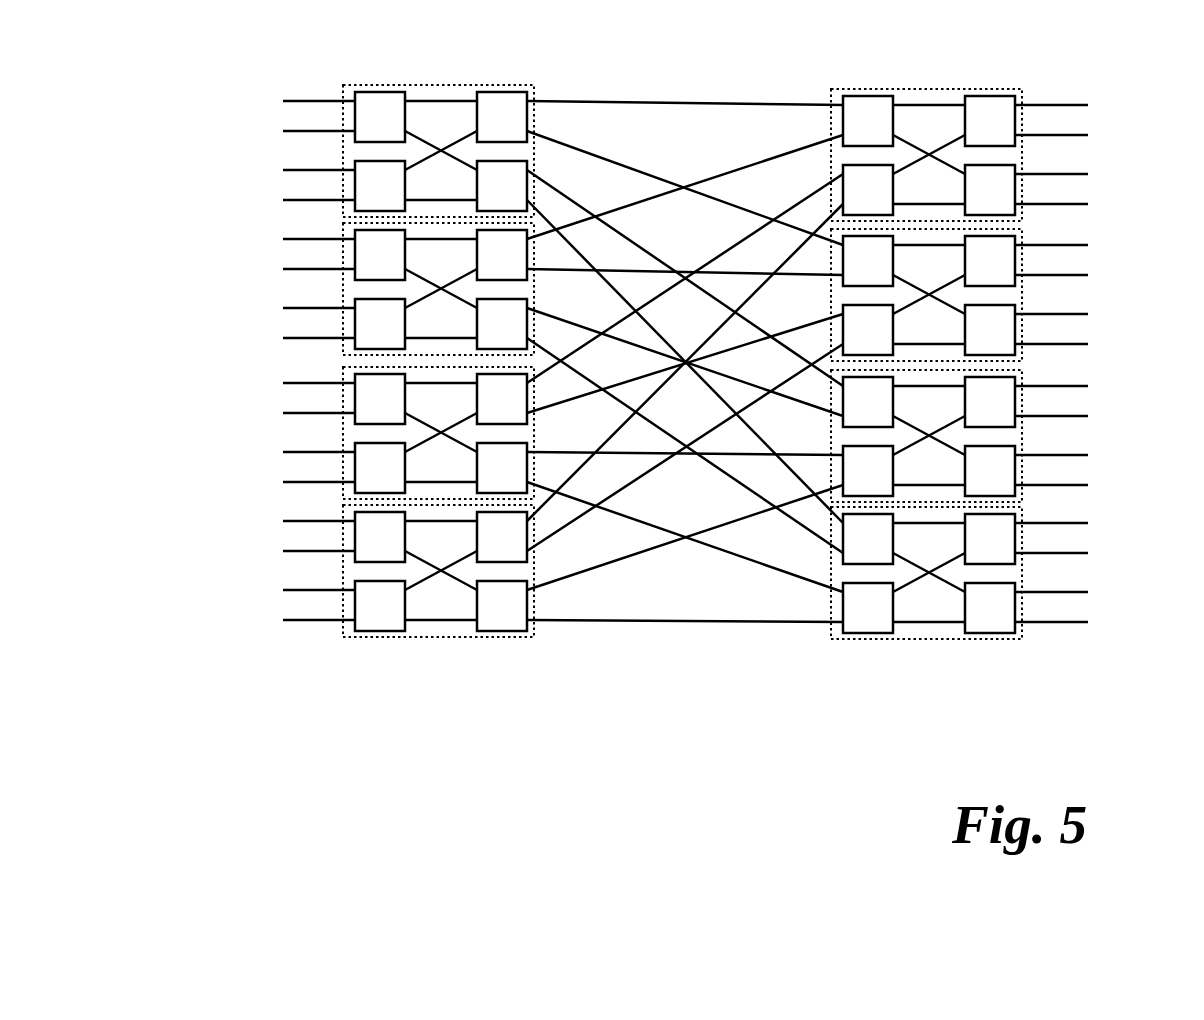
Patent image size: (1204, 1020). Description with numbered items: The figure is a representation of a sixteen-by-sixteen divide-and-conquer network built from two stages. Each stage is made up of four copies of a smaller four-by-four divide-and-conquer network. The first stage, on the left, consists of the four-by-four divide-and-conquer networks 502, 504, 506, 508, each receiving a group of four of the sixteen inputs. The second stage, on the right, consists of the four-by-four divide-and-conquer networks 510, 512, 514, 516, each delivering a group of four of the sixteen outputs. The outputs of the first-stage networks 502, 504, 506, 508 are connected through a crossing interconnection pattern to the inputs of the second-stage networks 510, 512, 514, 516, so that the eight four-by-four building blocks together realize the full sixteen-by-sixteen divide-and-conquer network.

The 4×4 divide-and-conquer network 502 is at (343, 85).
The 4×4 divide-and-conquer network 504 is at (343, 224).
The 4×4 divide-and-conquer network 506 is at (343, 368).
The 4×4 divide-and-conquer network 508 is at (343, 506).
The 4×4 divide-and-conquer network 510 is at (1022, 89).
The 4×4 divide-and-conquer network 512 is at (1022, 229).
The 4×4 divide-and-conquer network 514 is at (1022, 370).
The 4×4 divide-and-conquer network 516 is at (1022, 507).